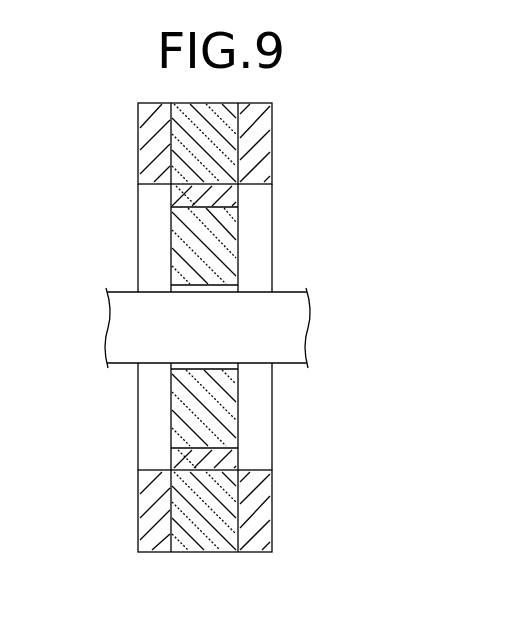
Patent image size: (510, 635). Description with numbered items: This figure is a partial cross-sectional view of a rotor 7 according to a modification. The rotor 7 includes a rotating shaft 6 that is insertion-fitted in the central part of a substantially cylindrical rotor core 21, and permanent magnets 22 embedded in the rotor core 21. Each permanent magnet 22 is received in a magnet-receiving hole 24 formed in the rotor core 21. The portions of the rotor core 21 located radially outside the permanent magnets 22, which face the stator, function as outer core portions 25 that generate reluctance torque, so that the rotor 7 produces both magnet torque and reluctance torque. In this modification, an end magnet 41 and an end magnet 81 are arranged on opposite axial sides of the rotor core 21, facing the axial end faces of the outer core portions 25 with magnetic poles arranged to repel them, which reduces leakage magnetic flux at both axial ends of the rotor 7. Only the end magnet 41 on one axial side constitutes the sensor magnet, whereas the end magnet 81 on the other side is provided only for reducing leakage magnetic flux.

The rotor 7 is at (274, 131).
The end magnet 81 is at (257, 150).
The end magnet 41 is at (158, 144).
The outer core portions 25 is at (230, 167).
The magnet-receiving holes 24 is at (203, 197).
The permanent magnets 22 is at (205, 215).
The rotor core 21 is at (222, 265).
The rotating shaft 6 is at (301, 319).